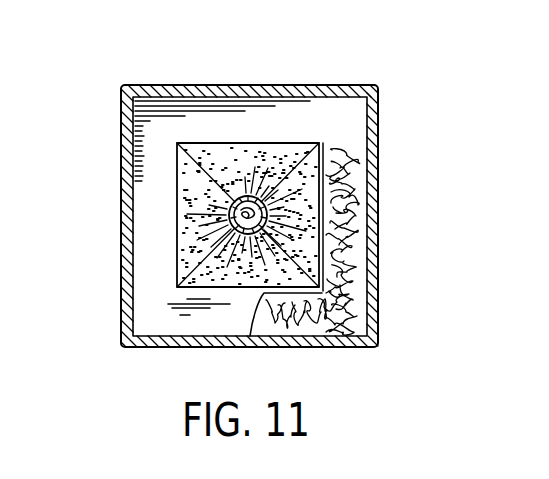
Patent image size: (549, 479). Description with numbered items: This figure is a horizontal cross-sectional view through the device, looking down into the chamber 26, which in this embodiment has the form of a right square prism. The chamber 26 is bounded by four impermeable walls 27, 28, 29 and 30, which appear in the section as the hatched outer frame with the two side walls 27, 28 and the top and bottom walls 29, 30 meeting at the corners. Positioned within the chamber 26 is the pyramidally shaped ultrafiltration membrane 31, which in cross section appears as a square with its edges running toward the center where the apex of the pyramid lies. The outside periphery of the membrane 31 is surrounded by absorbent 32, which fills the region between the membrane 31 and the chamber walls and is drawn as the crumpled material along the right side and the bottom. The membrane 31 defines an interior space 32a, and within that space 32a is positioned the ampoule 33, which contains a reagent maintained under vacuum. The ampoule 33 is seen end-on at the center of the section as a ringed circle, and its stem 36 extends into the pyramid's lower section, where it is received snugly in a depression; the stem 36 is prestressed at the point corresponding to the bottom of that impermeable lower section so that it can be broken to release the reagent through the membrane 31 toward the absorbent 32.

The chamber 26 is at (366, 85).
The impermeable wall 27 is at (381, 256).
The impermeable wall 28 is at (126, 190).
The impermeable wall 29 is at (258, 84).
The impermeable wall 30 is at (214, 348).
The ultrafiltration membrane 31 is at (314, 202).
The absorbent 32 is at (355, 330).
The space 32a is at (216, 266).
The ampoule 33 is at (229, 215).
The stem 36 is at (270, 214).